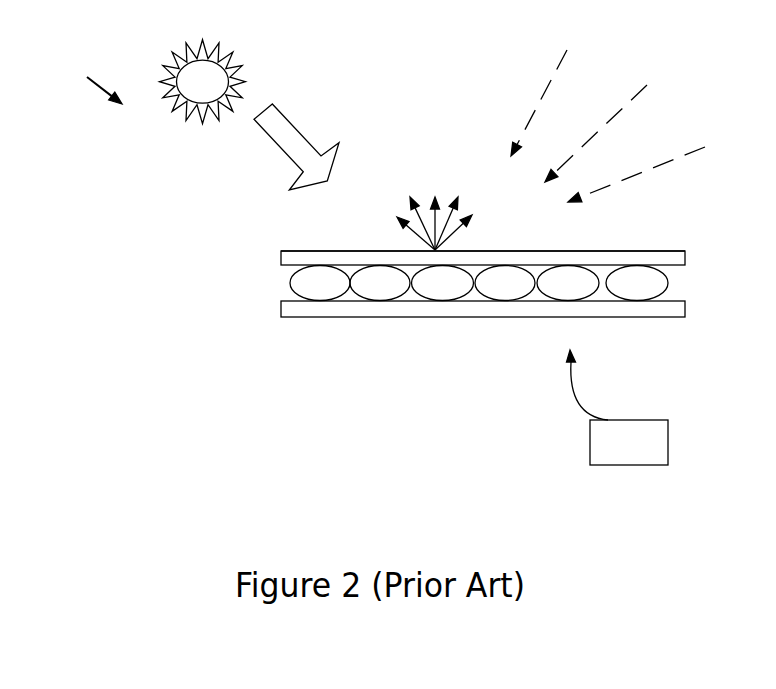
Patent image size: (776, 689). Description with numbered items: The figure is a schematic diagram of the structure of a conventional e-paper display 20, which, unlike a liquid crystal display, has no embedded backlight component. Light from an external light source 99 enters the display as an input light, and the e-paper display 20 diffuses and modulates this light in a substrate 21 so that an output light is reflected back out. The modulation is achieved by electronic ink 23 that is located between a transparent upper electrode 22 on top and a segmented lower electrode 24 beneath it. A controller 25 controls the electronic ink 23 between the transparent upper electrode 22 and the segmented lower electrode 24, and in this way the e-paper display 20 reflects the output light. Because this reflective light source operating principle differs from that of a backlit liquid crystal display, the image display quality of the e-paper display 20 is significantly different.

The e-paper display 20 is at (89, 73).
The external light source 99 is at (240, 57).
The substrate 21 is at (642, 250).
The transparent upper electrode 22 is at (686, 253).
The electronic ink 23 is at (667, 283).
The segmented lower electrode 24 is at (686, 306).
The controller 25 is at (618, 407).